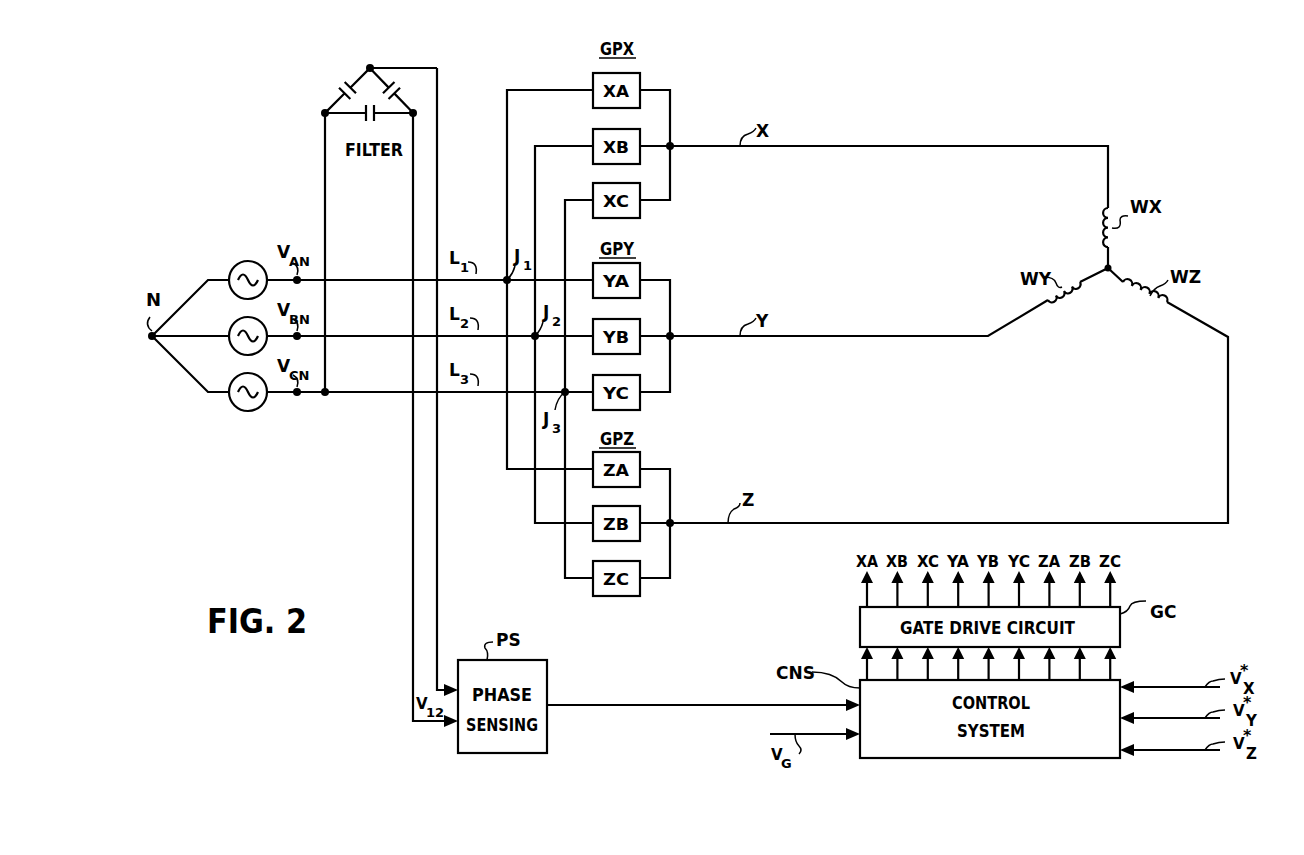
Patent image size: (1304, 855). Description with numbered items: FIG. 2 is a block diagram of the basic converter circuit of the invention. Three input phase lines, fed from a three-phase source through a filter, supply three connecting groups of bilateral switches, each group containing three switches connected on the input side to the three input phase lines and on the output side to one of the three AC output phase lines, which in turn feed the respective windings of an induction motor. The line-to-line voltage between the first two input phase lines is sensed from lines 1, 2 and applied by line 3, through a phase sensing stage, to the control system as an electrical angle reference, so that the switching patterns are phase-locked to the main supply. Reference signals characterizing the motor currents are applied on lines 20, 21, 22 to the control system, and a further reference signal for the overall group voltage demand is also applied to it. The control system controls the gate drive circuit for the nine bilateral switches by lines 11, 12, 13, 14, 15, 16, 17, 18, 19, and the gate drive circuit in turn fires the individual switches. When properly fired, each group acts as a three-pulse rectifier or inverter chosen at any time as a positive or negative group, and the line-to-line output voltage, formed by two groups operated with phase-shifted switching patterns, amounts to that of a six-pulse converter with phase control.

The line 1 is at (437, 512).
The line 2 is at (413, 513).
The line 3 is at (634, 705).
The lines 11 is at (867, 675).
The line 12 is at (897, 675).
The line 13 is at (927, 675).
The line 14 is at (957, 675).
The line 15 is at (988, 675).
The line 16 is at (1018, 675).
The line 17 is at (1048, 675).
The line 18 is at (1079, 675).
The line 19 is at (1112, 668).
The line 20 is at (1160, 687).
The line 21 is at (1150, 718).
The line 22 is at (1150, 750).